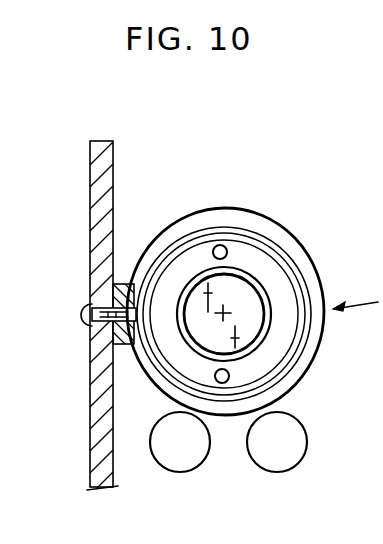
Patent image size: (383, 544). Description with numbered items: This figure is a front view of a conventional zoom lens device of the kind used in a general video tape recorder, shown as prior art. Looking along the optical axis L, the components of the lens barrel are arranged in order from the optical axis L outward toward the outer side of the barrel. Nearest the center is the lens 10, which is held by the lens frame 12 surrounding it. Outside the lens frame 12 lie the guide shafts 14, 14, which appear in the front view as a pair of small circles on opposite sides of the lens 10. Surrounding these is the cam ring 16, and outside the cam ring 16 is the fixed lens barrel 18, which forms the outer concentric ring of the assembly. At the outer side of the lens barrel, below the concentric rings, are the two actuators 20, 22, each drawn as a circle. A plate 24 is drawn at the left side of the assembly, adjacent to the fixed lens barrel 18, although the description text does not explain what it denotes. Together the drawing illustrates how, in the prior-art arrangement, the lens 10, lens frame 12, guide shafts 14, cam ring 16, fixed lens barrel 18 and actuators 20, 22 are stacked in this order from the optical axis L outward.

The lens 10 is at (283, 288).
The lens frame 12 is at (247, 300).
The guide shafts 14 is at (226, 248).
The cam ring 16 is at (209, 228).
The fixed lens barrel 18 is at (173, 225).
The actuator 20 is at (283, 458).
The actuator 22 is at (181, 458).
The plate 24 is at (96, 409).
The optical axis L is at (229, 318).